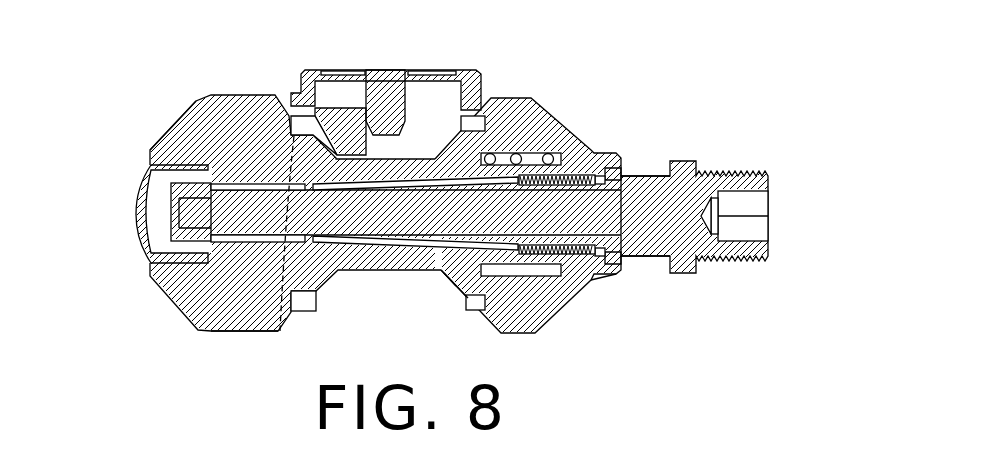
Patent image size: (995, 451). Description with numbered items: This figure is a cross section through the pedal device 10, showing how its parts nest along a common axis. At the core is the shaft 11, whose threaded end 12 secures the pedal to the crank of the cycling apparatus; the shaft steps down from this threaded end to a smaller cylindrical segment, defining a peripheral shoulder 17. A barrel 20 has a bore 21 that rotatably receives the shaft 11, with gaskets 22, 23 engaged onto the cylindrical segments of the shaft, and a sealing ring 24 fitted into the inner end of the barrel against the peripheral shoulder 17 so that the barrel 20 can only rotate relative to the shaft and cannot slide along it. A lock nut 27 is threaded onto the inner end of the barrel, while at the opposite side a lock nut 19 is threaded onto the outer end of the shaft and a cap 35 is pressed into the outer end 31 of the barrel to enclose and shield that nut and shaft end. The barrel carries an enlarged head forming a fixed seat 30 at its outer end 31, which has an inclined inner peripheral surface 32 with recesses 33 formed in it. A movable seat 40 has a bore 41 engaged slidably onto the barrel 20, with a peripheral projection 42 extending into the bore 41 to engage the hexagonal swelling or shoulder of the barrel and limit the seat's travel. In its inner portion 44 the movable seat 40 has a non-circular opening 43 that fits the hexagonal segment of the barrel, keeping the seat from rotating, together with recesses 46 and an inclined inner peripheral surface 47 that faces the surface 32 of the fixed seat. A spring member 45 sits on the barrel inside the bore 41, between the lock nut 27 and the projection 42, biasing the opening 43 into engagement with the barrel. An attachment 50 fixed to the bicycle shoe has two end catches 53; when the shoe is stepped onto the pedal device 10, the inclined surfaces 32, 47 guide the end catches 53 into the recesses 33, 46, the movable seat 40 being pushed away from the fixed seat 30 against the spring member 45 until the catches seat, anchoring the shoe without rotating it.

The pedal device 10 is at (728, 75).
The shaft 11 is at (424, 205).
The threaded end 12 is at (725, 166).
The peripheral shoulder 17 is at (614, 246).
The lock nut 19 is at (197, 231).
The barrel 20 is at (358, 265).
The bore 21 is at (297, 289).
The gasket 22 is at (172, 291).
The gasket 23 is at (588, 268).
The sealing ring 24 is at (614, 167).
The lock nut 27 is at (594, 142).
The fixed seat 30 is at (244, 314).
The outer end 31 is at (158, 121).
The inclined inner peripheral surface 32 is at (322, 125).
The recesses 33 is at (300, 288).
The cap 35 is at (128, 210).
The movable seat 40 is at (522, 318).
The bore 41 is at (501, 290).
The peripheral projection 42 is at (460, 302).
The non-circular opening 43 is at (445, 279).
The inner portion 44 is at (441, 282).
The spring member 45 is at (548, 290).
The recesses 46 is at (495, 108).
The inclined inner peripheral surface 47 is at (468, 120).
The attachment 50 is at (383, 75).
The end catches 53 is at (283, 80).